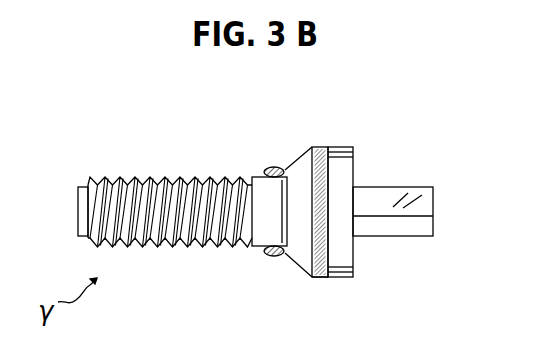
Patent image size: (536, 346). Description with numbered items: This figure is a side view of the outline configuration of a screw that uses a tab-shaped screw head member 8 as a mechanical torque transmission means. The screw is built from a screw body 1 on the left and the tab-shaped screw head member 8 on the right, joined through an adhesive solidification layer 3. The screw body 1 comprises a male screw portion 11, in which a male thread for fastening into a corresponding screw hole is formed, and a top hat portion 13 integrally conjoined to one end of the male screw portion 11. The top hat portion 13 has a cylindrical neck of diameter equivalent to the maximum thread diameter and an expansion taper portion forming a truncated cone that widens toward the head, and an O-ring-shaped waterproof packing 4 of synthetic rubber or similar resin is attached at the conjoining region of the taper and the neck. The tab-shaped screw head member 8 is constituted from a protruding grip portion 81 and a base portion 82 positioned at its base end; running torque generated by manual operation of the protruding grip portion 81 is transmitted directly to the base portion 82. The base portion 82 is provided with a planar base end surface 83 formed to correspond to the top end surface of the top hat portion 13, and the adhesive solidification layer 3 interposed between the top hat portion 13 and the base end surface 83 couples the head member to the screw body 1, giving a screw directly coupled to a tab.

The screw body 1 is at (147, 187).
The male screw portion 11 is at (168, 176).
The waterproof packing 4 is at (273, 166).
The top hat portion 13 is at (303, 153).
The adhesive solidification layer 3 is at (323, 146).
The base portion 82 is at (353, 165).
The protruding grip portion 81 is at (403, 187).
The tab-shaped screw head member 8 is at (435, 225).
The base end surface 83 is at (314, 272).